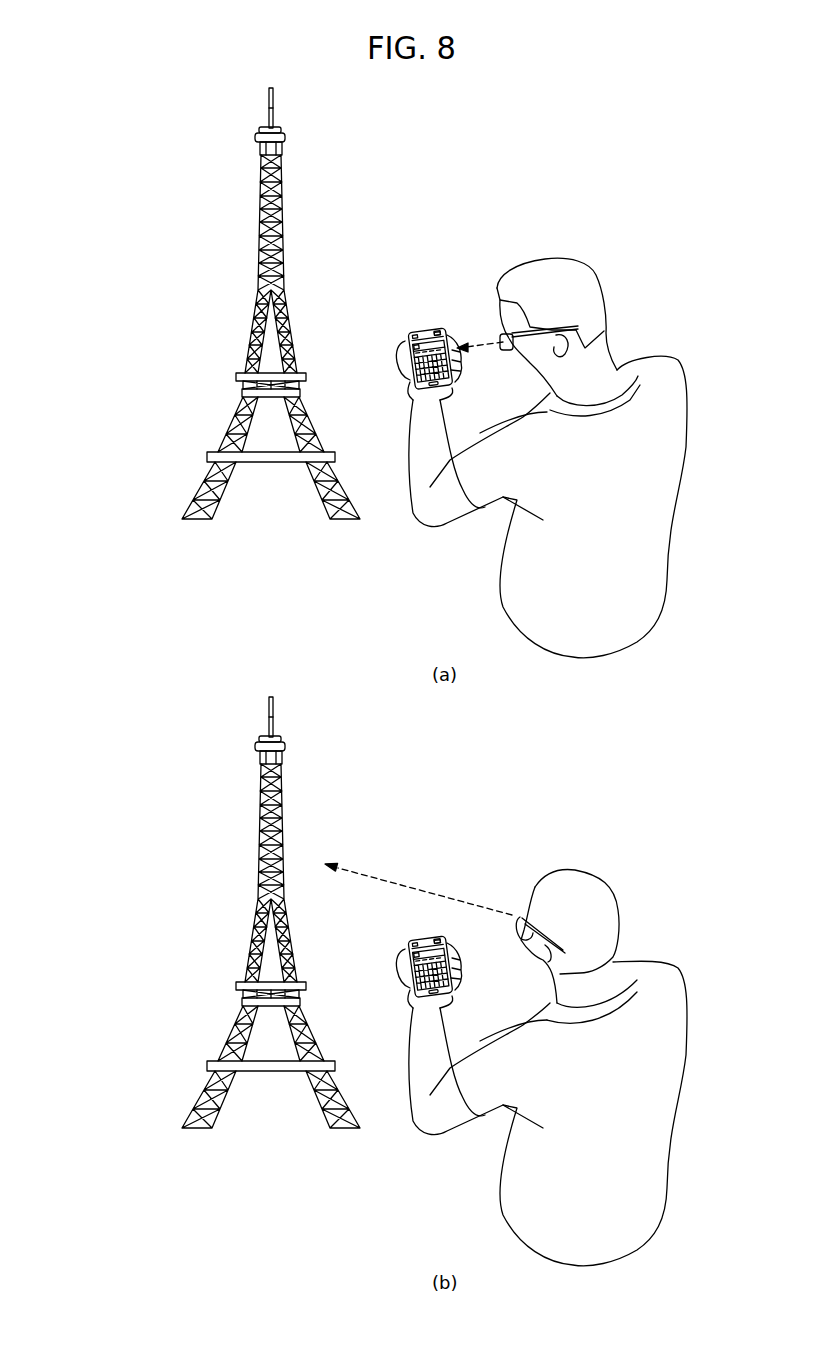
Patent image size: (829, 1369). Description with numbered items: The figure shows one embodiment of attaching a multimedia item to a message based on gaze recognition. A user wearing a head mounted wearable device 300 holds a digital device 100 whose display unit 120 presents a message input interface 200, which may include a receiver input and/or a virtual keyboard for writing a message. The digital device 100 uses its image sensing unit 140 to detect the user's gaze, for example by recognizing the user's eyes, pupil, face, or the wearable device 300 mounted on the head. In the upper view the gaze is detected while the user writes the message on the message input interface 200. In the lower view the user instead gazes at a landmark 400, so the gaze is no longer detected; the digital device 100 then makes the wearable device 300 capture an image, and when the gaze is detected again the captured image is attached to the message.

The digital device 100 is at (418, 333).
The display unit 120 is at (407, 350).
The image sensing unit 140 is at (437, 332).
The message input interface 200 is at (412, 373).
The wearable device 300 is at (507, 350).
The landmark 400 is at (283, 192).